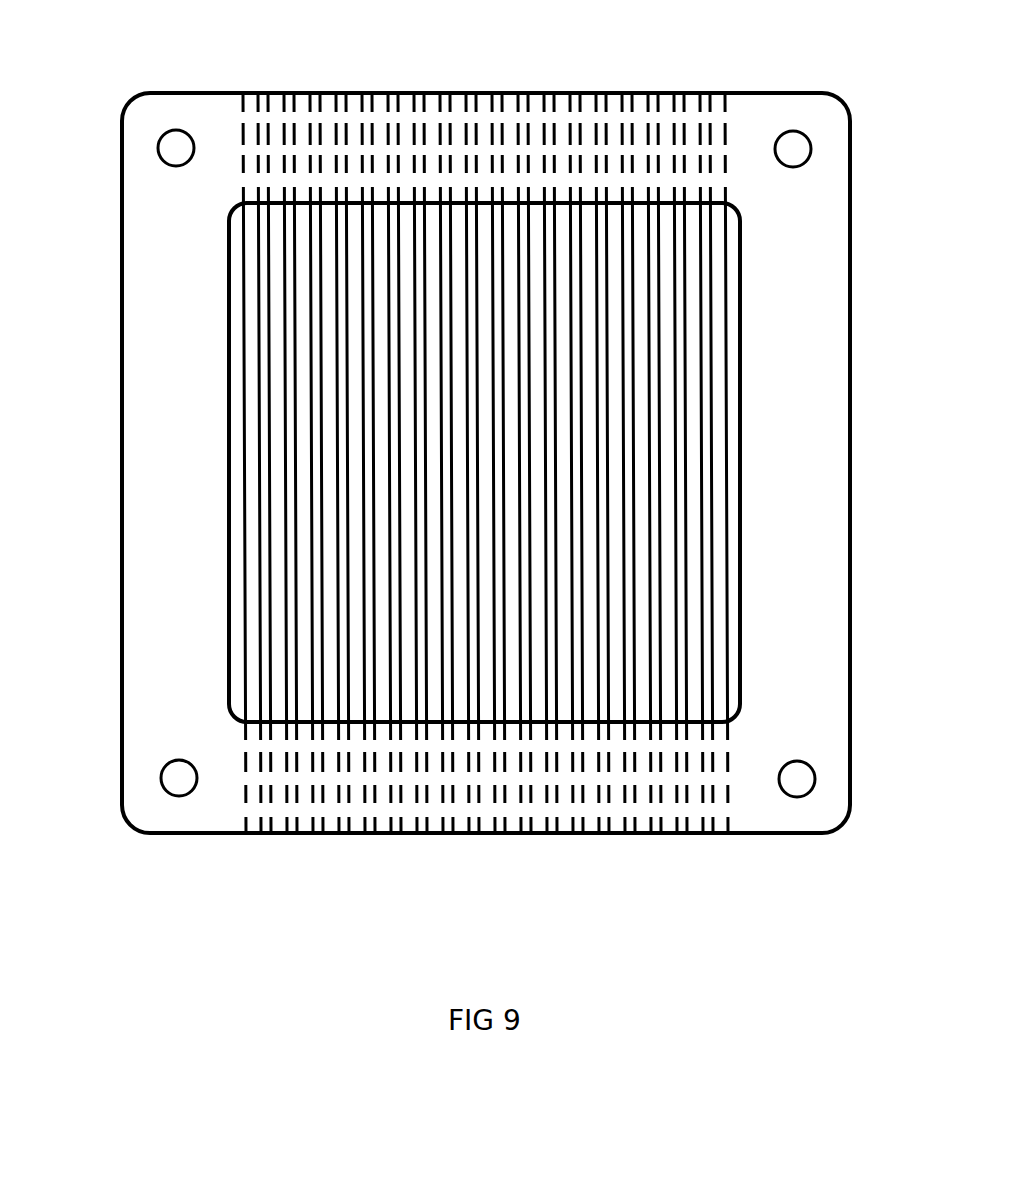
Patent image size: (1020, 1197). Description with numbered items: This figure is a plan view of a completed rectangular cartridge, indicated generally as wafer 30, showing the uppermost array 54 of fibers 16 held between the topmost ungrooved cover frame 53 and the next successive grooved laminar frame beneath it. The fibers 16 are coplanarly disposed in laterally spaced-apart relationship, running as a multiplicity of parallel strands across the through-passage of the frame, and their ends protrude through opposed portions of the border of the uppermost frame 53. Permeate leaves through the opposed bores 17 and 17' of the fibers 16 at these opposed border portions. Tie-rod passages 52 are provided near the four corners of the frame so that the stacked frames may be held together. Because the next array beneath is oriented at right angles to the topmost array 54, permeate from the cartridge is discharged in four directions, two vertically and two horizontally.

The wafer 30 is at (135, 868).
The tie-rod passages 52 is at (174, 146).
The ungrooved topmost frame 53 is at (777, 633).
The arrays 54 is at (718, 503).
The fibers 16 is at (243, 515).
The bores 17 is at (487, 846).
The opposed bores 17' is at (484, 105).